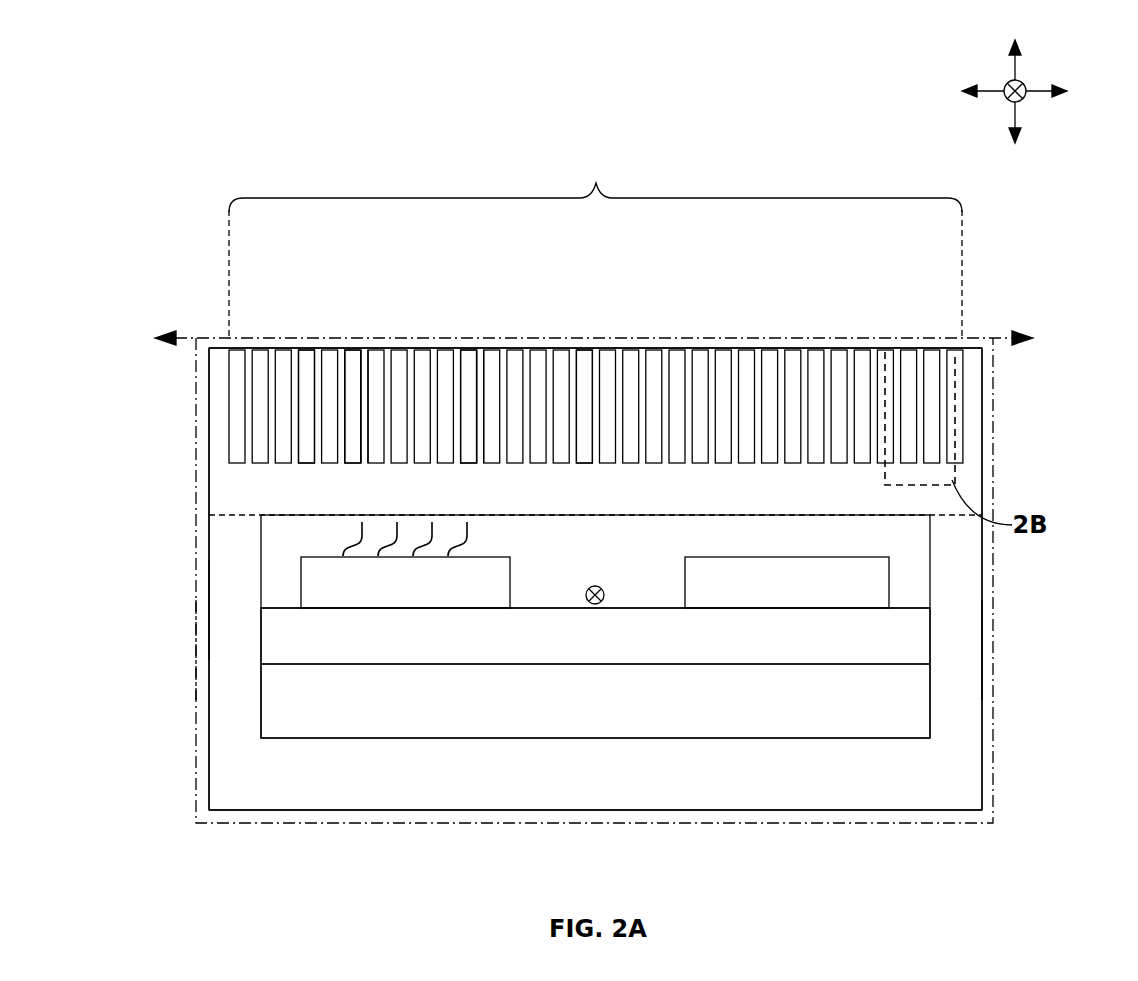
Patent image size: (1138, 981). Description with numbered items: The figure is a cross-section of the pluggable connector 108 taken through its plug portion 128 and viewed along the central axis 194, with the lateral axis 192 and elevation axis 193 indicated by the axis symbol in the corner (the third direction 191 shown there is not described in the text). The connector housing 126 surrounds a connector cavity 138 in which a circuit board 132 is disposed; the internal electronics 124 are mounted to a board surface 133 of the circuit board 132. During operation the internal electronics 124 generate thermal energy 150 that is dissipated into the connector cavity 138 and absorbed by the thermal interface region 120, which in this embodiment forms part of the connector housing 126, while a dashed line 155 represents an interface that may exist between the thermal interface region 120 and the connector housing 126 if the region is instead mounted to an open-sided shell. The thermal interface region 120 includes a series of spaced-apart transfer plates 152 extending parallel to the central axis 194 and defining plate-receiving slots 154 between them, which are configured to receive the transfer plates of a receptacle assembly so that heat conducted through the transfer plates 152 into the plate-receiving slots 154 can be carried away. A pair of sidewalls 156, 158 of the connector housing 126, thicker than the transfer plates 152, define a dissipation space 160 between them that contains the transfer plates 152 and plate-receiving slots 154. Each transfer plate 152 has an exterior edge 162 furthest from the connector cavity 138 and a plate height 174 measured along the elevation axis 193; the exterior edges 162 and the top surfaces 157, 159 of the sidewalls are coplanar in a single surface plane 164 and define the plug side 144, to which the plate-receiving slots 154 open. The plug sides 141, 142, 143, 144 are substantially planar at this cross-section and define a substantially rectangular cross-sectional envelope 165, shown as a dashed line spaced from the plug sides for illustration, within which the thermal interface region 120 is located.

The pluggable connector 108 is at (362, 128).
The thermal interface region 120 is at (660, 325).
The internal electronics 124 is at (790, 557).
The connector housing 126 is at (208, 610).
The plug portion 128 is at (1040, 724).
The circuit board 132 is at (688, 665).
The board surface 133 is at (640, 598).
The connector cavity 138 is at (380, 716).
The plug side 141 is at (1045, 593).
The plug side 142 is at (612, 835).
The plug side 143 is at (180, 648).
The plug side 144 is at (806, 325).
The thermal energy 150 is at (325, 535).
The transfer plates 152 is at (400, 360).
The plate-receiving slots 154 is at (350, 350).
The dashed line 155 is at (955, 515).
The sidewall 156 is at (208, 438).
The top surface 157 is at (218, 340).
The sidewall 158 is at (980, 424).
The top surface 159 is at (976, 340).
The dissipation space 160 is at (595, 184).
The exterior edge 162 is at (297, 348).
The surface plane 164 is at (183, 343).
The cross-sectional envelope 165 is at (993, 648).
The plate height 174 is at (1137, 560).
The first axis 191 is at (1008, 104).
The lateral axis 192 is at (1038, 88).
The elevation axis 193 is at (1016, 70).
The central axis 194 is at (586, 588).